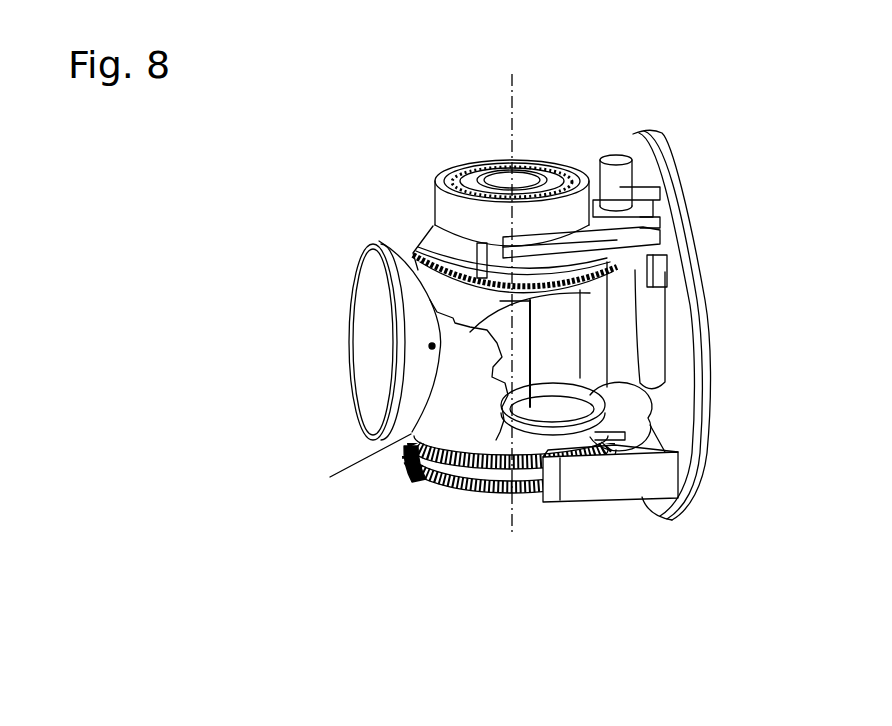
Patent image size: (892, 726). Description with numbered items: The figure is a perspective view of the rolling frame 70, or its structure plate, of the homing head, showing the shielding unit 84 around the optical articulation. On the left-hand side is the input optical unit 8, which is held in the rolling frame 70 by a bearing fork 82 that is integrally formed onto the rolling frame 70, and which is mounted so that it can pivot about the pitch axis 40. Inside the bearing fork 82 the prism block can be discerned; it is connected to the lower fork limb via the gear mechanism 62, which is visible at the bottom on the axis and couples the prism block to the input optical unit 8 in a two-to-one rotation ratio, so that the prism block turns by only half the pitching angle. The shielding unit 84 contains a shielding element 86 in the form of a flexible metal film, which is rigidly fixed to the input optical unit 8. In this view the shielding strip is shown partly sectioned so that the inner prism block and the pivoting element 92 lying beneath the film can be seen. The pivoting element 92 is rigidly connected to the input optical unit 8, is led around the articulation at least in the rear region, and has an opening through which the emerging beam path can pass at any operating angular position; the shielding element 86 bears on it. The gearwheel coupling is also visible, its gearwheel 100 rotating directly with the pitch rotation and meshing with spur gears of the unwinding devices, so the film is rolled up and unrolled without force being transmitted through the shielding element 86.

The input optical unit 8 is at (379, 241).
The pitch axis 40 is at (512, 90).
The gear mechanism 62 is at (440, 487).
The rolling frame 70 is at (678, 148).
The bearing fork 82 is at (623, 260).
The shielding unit 84 is at (411, 437).
The shielding element 86 is at (478, 418).
The pivoting element 92 is at (447, 287).
The gearwheel 100 is at (417, 255).